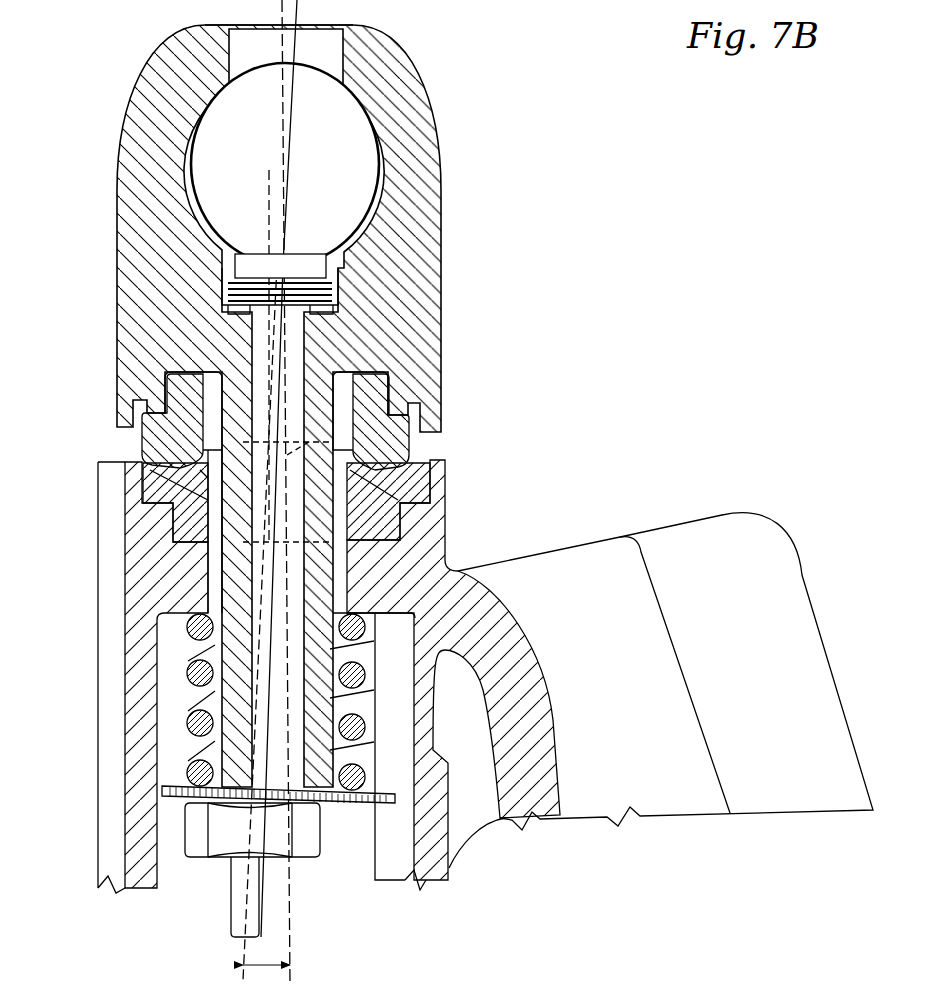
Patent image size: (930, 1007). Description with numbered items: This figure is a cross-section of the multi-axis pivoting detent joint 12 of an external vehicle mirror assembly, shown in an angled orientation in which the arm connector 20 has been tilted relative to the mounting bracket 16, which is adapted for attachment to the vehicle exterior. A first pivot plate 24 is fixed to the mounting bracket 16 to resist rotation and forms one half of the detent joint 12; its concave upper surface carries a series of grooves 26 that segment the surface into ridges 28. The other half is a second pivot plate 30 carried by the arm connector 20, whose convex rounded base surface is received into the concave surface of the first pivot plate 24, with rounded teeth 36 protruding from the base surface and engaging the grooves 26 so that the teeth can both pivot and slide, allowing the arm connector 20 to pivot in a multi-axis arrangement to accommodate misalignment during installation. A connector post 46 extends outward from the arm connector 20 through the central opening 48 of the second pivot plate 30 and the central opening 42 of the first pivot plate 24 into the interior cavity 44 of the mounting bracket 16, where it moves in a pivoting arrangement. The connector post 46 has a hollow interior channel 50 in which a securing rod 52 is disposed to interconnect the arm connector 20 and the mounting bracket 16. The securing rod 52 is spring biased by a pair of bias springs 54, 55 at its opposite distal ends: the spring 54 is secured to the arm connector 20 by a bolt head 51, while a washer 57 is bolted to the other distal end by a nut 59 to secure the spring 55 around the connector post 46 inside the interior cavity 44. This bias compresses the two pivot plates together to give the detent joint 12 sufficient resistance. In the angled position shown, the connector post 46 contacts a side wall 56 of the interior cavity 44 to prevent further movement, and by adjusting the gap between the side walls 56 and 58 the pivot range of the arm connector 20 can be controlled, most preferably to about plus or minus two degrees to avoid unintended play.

The detent joint 12 is at (98, 447).
The lower mounting bracket 16 is at (605, 548).
The arm connector 20 is at (402, 76).
The first pivot plate 24 is at (445, 478).
The grooves 26 is at (125, 505).
The ridges 28 is at (140, 462).
The second pivot plate 30 is at (385, 393).
The rounded teeth 36 is at (407, 452).
The central opening 42 is at (217, 522).
The interior cavity 44 is at (175, 668).
The connector post 46 is at (325, 703).
The central opening 48 is at (360, 385).
The hollow interior channel 50 is at (248, 763).
The bolt head 51 is at (308, 254).
The securing rod 52 is at (231, 904).
The bias spring 54 is at (343, 279).
The bias spring 55 is at (360, 784).
The side wall 56 is at (220, 576).
The washer 57 is at (451, 812).
The side wall 58 is at (450, 542).
The nut 59 is at (323, 831).